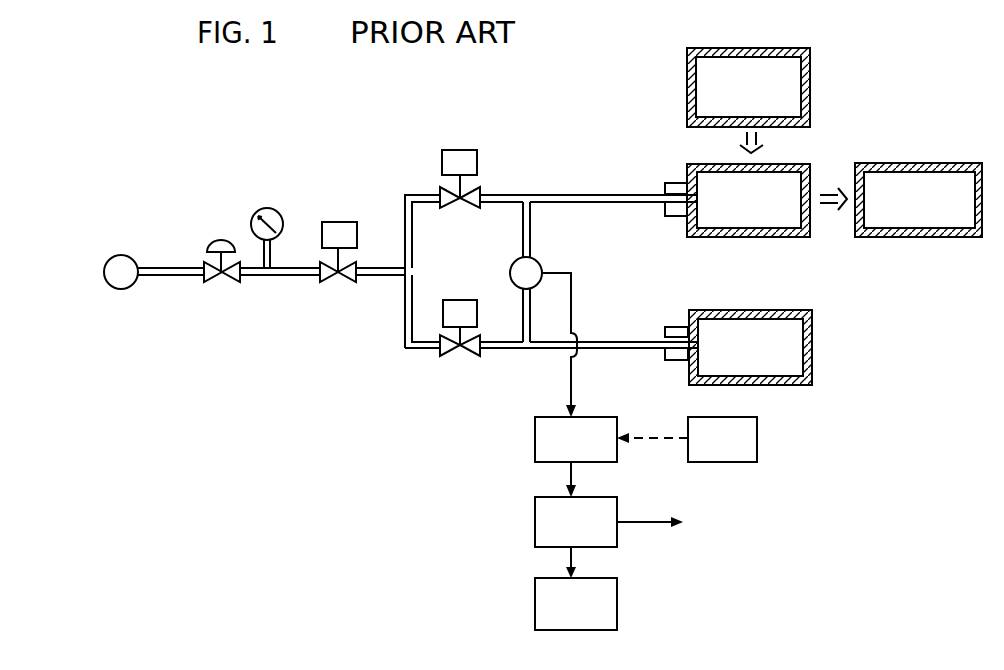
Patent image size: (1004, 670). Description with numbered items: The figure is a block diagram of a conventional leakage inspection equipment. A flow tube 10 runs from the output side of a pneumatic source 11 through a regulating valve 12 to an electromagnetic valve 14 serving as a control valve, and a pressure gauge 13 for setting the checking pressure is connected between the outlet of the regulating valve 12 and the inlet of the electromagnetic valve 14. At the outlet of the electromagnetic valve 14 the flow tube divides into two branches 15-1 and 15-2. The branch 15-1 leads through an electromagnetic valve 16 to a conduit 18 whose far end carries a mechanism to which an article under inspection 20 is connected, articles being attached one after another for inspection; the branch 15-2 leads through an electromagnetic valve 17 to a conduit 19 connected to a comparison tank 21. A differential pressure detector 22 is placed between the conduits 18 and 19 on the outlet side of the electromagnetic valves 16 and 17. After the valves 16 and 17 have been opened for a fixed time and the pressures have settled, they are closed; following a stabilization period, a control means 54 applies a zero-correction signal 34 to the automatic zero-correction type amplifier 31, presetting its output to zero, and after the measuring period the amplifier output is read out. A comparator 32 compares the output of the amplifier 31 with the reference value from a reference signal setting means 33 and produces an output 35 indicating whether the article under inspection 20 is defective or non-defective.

The flow tube 10 is at (173, 278).
The pneumatic source 11 is at (126, 256).
The regulating valve 12 is at (230, 281).
The pressure gauge 13 is at (270, 207).
The electromagnetic valve 14 is at (350, 281).
The branch 15-1 is at (410, 196).
The branch 15-2 is at (413, 352).
The electromagnetic valve 16 is at (467, 207).
The electromagnetic valve 17 is at (467, 357).
The conduit 18 is at (590, 194).
The conduit 19 is at (610, 340).
The article under inspection 20 is at (788, 236).
The comparison tank 21 is at (812, 367).
The differential pressure detector 22 is at (538, 259).
The amplifier 31 is at (607, 417).
The comparator 32 is at (600, 495).
The reference signal setting means 33 is at (617, 593).
The zero-correction signal 34 is at (662, 440).
The output 35 is at (673, 523).
The control means 54 is at (758, 427).